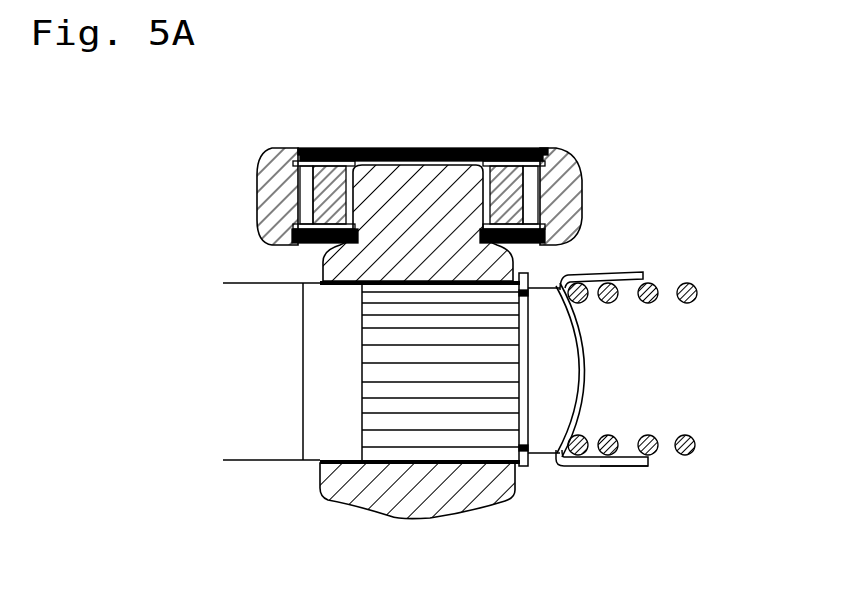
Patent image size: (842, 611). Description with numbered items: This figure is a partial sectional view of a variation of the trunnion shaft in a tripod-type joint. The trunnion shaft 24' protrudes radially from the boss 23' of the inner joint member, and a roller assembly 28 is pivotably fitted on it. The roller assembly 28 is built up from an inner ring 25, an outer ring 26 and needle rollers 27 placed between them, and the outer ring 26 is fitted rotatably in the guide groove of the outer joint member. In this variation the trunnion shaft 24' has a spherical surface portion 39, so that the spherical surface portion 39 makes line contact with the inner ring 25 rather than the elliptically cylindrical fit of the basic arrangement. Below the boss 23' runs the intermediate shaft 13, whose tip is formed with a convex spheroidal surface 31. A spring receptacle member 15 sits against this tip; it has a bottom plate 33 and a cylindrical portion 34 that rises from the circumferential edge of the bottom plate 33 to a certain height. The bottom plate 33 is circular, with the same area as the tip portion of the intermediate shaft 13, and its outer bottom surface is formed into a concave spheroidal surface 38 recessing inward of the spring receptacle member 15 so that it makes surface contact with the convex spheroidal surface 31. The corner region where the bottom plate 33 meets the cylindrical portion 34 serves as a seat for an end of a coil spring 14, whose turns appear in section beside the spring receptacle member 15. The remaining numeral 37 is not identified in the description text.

The intermediate shaft 13 is at (247, 302).
The coil spring 14 is at (686, 462).
The spring receptacle member 15 is at (629, 470).
The boss 23' is at (417, 514).
The trunnion shaft 24' is at (418, 185).
The inner ring 25 is at (337, 192).
The outer ring 26 is at (272, 202).
The needle roller 27 is at (305, 205).
The roller assembly 28 is at (588, 160).
The convex spheroidal surface 31 is at (562, 380).
The bottom plate 33 is at (590, 349).
The cylindrical portion 34 is at (593, 466).
The upper flange 37 is at (645, 276).
The concave spheroidal surface 38 is at (577, 393).
The spherical surface portion 39 is at (562, 178).